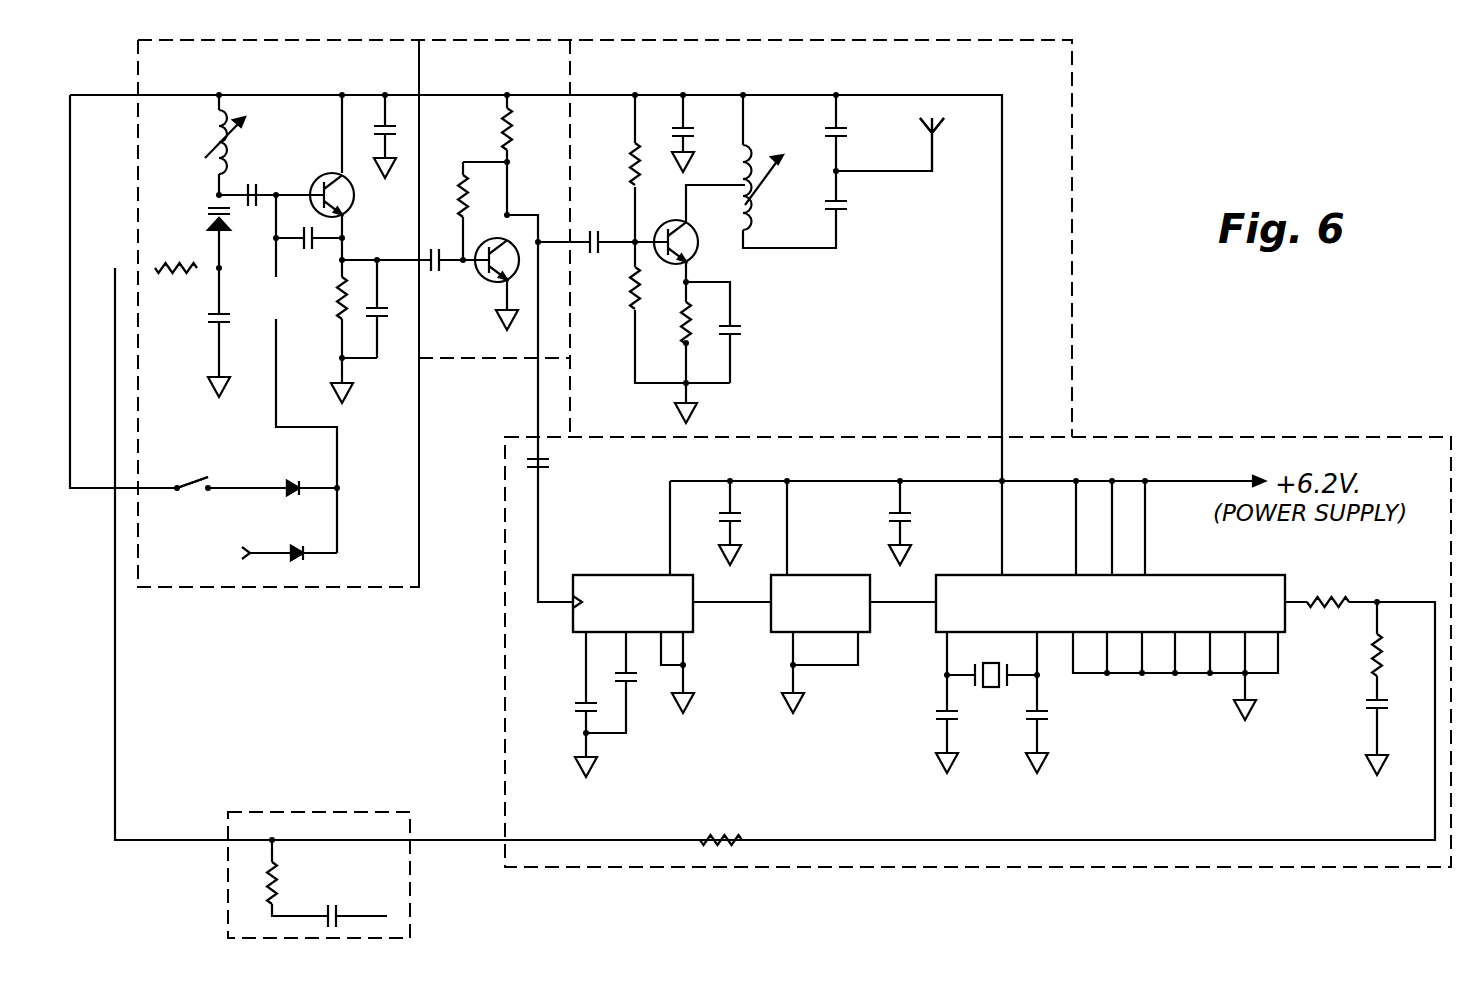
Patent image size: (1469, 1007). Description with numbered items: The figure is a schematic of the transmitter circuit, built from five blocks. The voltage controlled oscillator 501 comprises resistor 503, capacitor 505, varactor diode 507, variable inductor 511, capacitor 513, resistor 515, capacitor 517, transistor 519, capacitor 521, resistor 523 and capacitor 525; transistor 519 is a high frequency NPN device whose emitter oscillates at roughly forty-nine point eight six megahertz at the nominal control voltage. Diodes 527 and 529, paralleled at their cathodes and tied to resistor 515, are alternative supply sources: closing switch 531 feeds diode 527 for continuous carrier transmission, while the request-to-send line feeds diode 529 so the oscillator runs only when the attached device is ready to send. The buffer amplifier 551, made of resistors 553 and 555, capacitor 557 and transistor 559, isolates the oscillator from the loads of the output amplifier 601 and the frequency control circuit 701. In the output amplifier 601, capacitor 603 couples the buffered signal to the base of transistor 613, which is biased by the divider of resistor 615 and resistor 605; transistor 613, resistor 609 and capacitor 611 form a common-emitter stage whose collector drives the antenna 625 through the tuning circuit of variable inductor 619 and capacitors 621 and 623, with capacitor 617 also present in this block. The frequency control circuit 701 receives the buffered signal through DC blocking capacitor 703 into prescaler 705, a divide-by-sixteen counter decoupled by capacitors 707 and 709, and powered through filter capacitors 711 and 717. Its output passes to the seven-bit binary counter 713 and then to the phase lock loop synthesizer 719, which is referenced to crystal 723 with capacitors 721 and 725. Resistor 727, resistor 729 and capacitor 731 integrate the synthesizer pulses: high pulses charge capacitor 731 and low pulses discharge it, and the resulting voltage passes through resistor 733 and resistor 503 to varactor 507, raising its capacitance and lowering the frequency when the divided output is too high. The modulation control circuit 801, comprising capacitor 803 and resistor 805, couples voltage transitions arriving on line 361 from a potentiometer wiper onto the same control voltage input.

The line 361 is at (388, 916).
The voltage controlled oscillator 501 is at (330, 587).
The resistor 503 is at (165, 270).
The capacitor 505 is at (214, 320).
The varactor diode 507 is at (215, 225).
The variable inductor 511 is at (212, 150).
The capacitor 513 is at (255, 185).
The resistor 515 is at (278, 300).
The capacitor 517 is at (348, 204).
The transistor 519 is at (322, 175).
The capacitor 521 is at (386, 335).
The resistor 523 is at (340, 300).
The capacitor 525 is at (378, 118).
The diode 527 is at (291, 480).
The diode 529 is at (297, 547).
The switch 531 is at (192, 484).
The buffer amplifier 551 is at (472, 358).
The resistor 553 is at (458, 190).
The resistor 555 is at (502, 135).
The capacitor 557 is at (440, 275).
The transistor 559 is at (492, 278).
The output amplifier 601 is at (1080, 172).
The capacitor 603 is at (590, 240).
The resistor 605 is at (633, 290).
The resistor 609 is at (688, 343).
The capacitor 611 is at (742, 330).
The transistor 613 is at (696, 258).
The resistor 615 is at (633, 165).
The capacitor 617 is at (682, 125).
The variable inductor 619 is at (775, 165).
The capacitor 621 is at (840, 125).
The capacitor 623 is at (848, 205).
The antenna 625 is at (940, 125).
The frequency control circuit 701 is at (1292, 437).
The capacitor 703 is at (550, 463).
The prescaler 705 is at (618, 575).
The capacitor 707 is at (580, 708).
The capacitor 709 is at (620, 680).
The capacitor 711 is at (735, 512).
The seven-bit binary counter 713 is at (780, 640).
The capacitor 717 is at (905, 518).
The phase lock loop synthesizer 719 is at (947, 633).
The capacitor 721 is at (938, 715).
The crystal 723 is at (992, 690).
The capacitor 725 is at (1048, 713).
The resistor 727 is at (1318, 598).
The resistor 729 is at (1372, 645).
The capacitor 731 is at (1368, 705).
The resistor 733 is at (730, 840).
The modulation control circuit 801 is at (228, 920).
The capacitor 803 is at (332, 908).
The resistor 805 is at (268, 882).